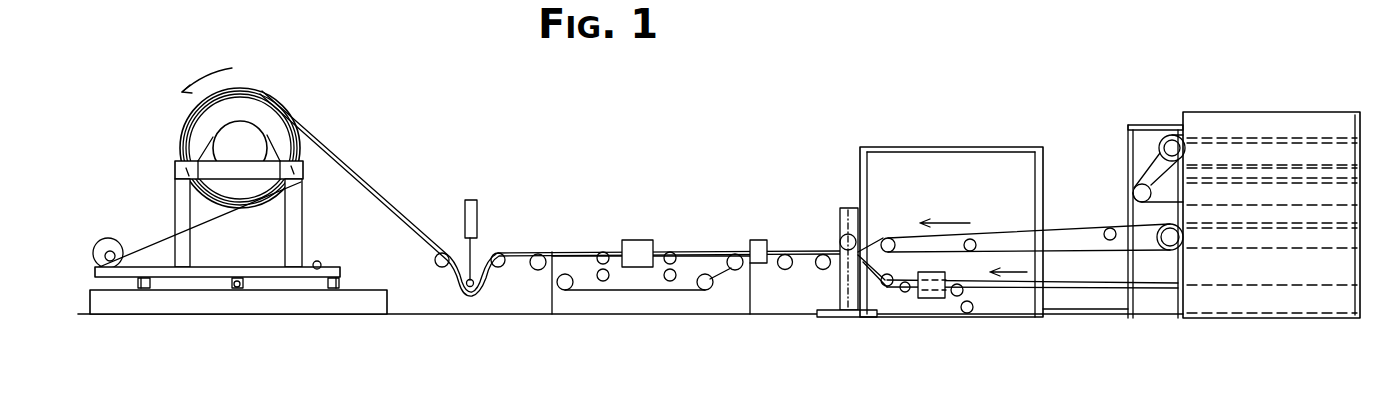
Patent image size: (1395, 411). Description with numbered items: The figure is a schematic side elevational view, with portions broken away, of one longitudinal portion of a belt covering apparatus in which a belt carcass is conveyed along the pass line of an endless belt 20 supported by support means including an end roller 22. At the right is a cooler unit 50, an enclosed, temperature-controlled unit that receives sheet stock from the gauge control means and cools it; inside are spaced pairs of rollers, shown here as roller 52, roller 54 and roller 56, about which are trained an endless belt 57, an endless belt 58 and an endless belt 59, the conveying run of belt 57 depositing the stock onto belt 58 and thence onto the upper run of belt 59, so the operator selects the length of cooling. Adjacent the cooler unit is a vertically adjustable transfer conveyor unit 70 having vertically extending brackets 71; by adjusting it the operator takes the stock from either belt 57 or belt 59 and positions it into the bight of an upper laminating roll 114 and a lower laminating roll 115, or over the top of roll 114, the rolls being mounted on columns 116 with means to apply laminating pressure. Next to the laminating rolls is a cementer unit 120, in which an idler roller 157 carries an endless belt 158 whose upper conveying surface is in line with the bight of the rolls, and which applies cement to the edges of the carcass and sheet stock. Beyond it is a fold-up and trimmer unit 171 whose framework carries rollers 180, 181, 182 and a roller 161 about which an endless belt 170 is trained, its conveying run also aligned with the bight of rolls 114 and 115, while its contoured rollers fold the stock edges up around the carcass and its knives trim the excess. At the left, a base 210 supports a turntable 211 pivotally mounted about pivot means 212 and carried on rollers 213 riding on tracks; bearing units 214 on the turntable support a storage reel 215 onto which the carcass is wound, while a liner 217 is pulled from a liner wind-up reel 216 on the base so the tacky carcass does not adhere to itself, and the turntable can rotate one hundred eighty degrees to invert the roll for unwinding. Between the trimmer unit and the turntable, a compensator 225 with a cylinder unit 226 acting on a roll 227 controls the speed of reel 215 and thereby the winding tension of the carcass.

The endless belt 20 is at (1060, 316).
The end roller 22 is at (958, 292).
The cooler unit 50 is at (1313, 108).
The roller 52 is at (1168, 145).
The roller 54 is at (1139, 193).
The roller 56 is at (1165, 240).
The endless belt 57 is at (1160, 162).
The endless belt 58 is at (1150, 178).
The endless belt 59 is at (1170, 250).
The transfer conveyor unit 70 is at (988, 199).
The vertically extending bracket 71 is at (862, 160).
The upper laminating roll 114 is at (841, 208).
The lower laminating roll 115 is at (848, 316).
The column 116 is at (857, 206).
The cementer unit 120 is at (764, 224).
The idler roller 157 is at (825, 270).
The endless belt 158 is at (820, 272).
The roller 161 is at (737, 268).
The endless belt 170 is at (670, 293).
The fold-up and trimmer unit 171 is at (643, 232).
The roller 180 is at (540, 268).
The roller 181 is at (567, 287).
The roller 182 is at (705, 288).
The base 210 is at (362, 303).
The turntable 211 is at (270, 270).
The pivot means 212 is at (240, 283).
The roller 213 is at (230, 284).
The bearing unit 214 is at (273, 162).
The storage reel 215 is at (263, 98).
The liner wind-up reel 216 is at (137, 208).
The liner 217 is at (210, 222).
The compensator 225 is at (476, 194).
The cylinder unit 226 is at (477, 222).
The roll 227 is at (462, 280).